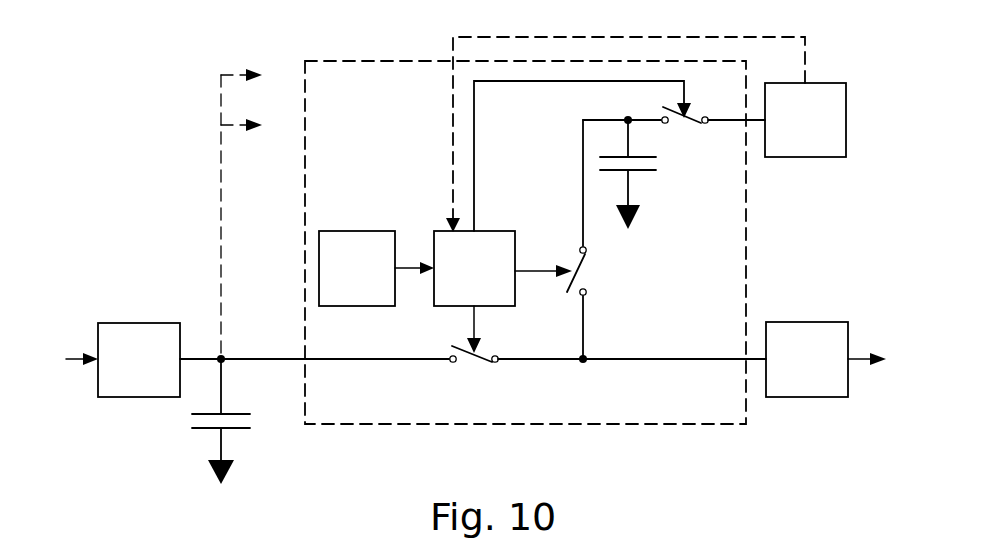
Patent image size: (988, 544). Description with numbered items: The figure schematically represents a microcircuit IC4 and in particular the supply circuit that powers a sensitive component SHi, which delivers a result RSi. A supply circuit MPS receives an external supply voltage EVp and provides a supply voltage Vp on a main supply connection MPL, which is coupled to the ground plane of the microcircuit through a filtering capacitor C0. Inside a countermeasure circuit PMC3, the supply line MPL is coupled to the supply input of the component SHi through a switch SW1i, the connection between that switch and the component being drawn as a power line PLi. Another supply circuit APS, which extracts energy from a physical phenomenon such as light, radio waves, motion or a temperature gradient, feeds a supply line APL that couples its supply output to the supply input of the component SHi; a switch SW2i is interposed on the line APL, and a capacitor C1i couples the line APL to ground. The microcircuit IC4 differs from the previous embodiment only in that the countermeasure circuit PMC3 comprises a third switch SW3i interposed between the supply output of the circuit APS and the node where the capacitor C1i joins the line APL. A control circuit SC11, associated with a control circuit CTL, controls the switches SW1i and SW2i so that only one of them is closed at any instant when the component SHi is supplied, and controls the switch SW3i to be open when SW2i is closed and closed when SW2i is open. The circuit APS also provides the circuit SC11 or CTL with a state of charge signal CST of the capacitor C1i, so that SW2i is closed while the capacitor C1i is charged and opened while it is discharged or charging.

The microcircuit IC4 is at (70, 92).
The supply voltage Vp is at (259, 211).
The countermeasure circuit PMC3 is at (525, 242).
The state of charge signal CST is at (625, 120).
The supply circuit APS is at (805, 120).
The supply line APL is at (584, 155).
The third switch SW3i is at (697, 126).
The capacitor C1i is at (648, 178).
The control circuit CTL is at (376, 268).
The control circuit SC11 is at (503, 292).
The switch SW2i is at (586, 272).
The supply circuit MPS is at (139, 360).
The external supply voltage EVp is at (55, 362).
The main supply connection MPL is at (205, 357).
The filtering capacitor C0 is at (192, 429).
The power line PLi is at (352, 368).
The switch SW1i is at (470, 370).
The component SHi is at (807, 359).
The result RSi is at (888, 362).